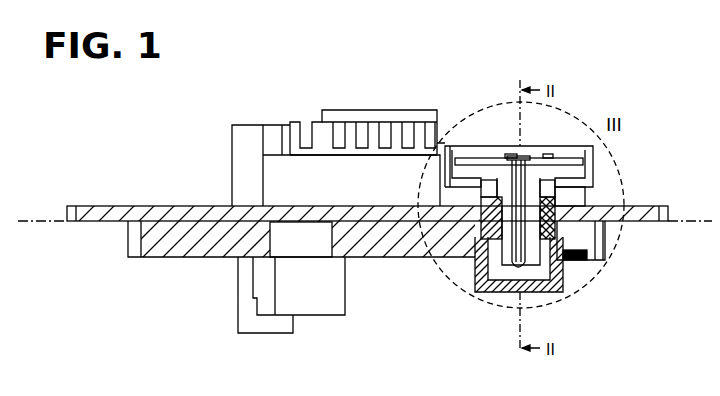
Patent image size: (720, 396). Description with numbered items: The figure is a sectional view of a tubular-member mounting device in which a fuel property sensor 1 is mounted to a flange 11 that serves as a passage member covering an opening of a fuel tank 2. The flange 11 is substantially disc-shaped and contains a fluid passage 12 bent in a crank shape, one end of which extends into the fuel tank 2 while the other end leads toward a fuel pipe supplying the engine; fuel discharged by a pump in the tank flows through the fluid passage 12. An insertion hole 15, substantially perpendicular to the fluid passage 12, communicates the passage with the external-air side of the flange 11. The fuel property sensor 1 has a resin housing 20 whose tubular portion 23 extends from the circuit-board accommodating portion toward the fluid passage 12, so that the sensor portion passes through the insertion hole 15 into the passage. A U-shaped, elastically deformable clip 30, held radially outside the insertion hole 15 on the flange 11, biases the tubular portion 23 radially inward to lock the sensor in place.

The fuel property sensor 1 is at (555, 139).
The fuel tank 2 is at (31, 219).
The flange 11 is at (169, 218).
The fluid passage 12 is at (497, 293).
The insertion hole 15 is at (557, 263).
The housing 20 is at (474, 145).
The tubular portion 23 is at (483, 222).
The clip 30 is at (485, 198).